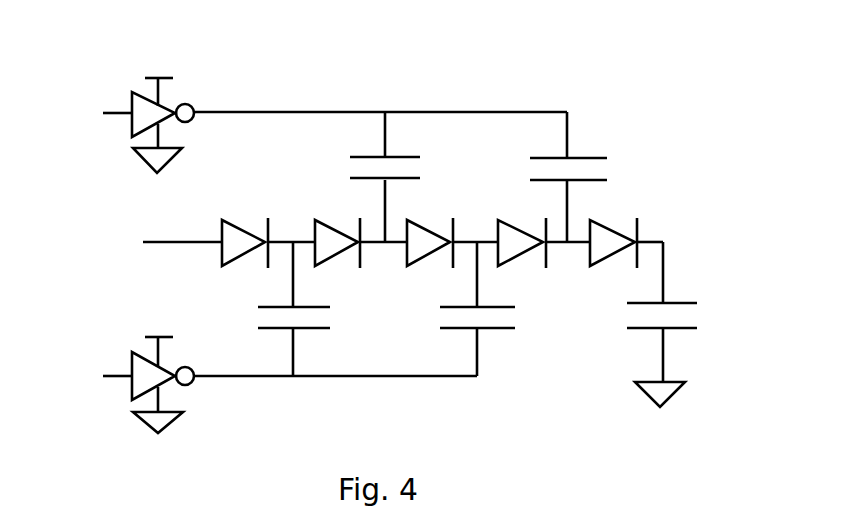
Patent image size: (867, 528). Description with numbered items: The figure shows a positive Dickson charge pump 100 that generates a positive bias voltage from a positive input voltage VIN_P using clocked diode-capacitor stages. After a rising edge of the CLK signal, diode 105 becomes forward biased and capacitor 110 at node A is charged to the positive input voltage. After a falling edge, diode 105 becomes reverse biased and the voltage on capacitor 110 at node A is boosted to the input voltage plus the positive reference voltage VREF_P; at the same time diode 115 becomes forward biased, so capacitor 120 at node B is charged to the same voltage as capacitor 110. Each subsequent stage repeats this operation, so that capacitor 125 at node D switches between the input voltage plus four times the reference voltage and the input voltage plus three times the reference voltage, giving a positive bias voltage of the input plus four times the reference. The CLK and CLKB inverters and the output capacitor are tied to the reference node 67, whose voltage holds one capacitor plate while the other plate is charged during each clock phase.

The positive Dickson charge pump 100 is at (353, 60).
The diode 105 is at (245, 212).
The diode 115 is at (328, 212).
The capacitor 110 is at (340, 317).
The capacitor 120 is at (433, 165).
The capacitor 125 is at (614, 160).
The reference node 67 is at (143, 163).